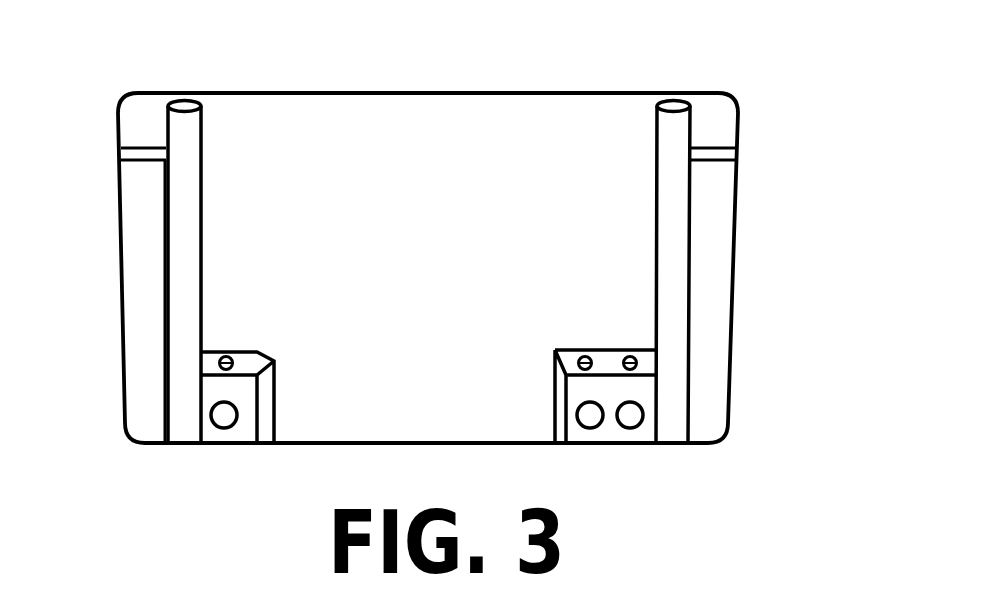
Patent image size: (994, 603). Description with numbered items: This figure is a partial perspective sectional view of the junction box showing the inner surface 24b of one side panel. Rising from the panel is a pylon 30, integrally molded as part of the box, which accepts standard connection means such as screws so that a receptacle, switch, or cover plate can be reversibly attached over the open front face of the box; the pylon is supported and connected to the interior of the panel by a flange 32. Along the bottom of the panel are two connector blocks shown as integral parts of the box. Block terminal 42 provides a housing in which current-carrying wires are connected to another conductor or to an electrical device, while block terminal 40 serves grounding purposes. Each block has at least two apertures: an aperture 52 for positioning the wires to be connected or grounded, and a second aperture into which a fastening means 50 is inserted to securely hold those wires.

The inner surface 24b is at (433, 148).
The pylon 30 is at (693, 125).
The flange 32 is at (707, 222).
The block terminal 40 is at (552, 398).
The block terminal 42 is at (308, 302).
The fastening means 50 is at (230, 355).
The aperture 52 is at (636, 428).